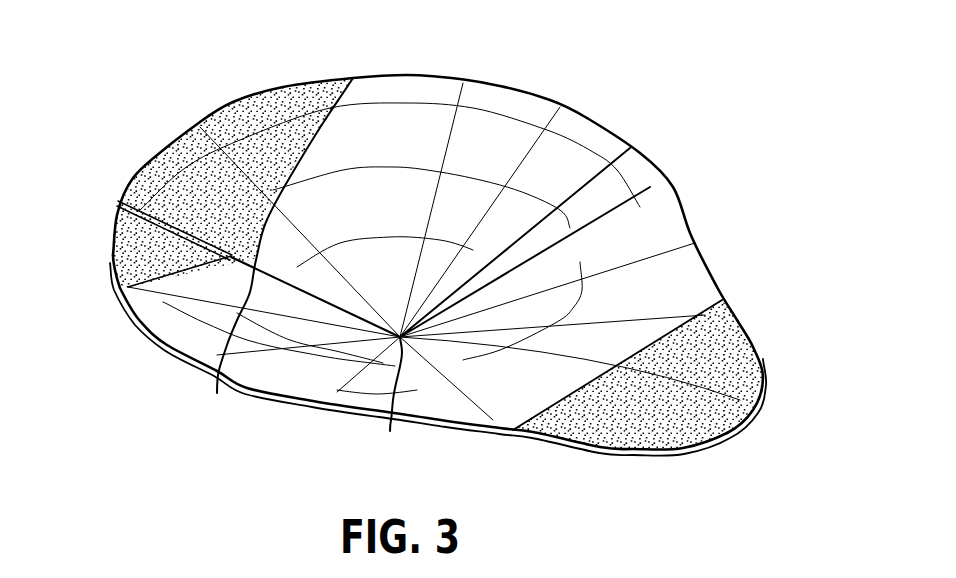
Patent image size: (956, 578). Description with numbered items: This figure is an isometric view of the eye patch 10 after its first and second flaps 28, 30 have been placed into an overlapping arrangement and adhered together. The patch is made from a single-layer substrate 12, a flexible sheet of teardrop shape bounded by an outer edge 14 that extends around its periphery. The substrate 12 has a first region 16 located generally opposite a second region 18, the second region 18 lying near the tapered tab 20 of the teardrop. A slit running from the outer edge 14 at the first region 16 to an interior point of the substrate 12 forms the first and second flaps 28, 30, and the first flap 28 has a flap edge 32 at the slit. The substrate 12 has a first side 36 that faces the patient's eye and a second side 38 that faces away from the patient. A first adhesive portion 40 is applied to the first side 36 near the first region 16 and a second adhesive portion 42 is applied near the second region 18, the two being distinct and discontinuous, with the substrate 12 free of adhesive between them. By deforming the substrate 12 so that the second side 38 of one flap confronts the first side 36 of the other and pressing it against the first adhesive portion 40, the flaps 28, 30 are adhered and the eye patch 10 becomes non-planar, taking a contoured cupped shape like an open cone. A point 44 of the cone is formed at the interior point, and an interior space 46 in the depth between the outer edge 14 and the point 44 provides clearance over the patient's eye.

The eye patch 10 is at (612, 57).
The single-layer substrate 12 is at (610, 148).
The outer edge 14 is at (673, 190).
The first region 16 is at (166, 301).
The second region 18 is at (686, 308).
The tapered tab 20 is at (728, 434).
The first flap 28 is at (200, 170).
The second flap 30 is at (127, 260).
The flap edge 32 is at (275, 256).
The first side 36 is at (477, 143).
The second side 38 is at (463, 428).
The first adhesive portion 40 is at (133, 230).
The second adhesive portion 42 is at (716, 370).
The point 44 is at (519, 307).
The interior space 46 is at (385, 150).